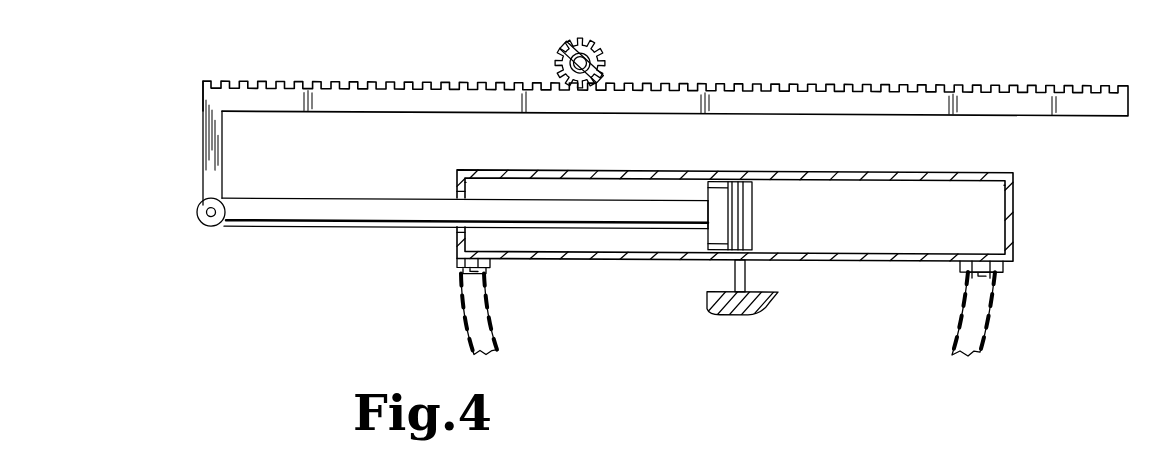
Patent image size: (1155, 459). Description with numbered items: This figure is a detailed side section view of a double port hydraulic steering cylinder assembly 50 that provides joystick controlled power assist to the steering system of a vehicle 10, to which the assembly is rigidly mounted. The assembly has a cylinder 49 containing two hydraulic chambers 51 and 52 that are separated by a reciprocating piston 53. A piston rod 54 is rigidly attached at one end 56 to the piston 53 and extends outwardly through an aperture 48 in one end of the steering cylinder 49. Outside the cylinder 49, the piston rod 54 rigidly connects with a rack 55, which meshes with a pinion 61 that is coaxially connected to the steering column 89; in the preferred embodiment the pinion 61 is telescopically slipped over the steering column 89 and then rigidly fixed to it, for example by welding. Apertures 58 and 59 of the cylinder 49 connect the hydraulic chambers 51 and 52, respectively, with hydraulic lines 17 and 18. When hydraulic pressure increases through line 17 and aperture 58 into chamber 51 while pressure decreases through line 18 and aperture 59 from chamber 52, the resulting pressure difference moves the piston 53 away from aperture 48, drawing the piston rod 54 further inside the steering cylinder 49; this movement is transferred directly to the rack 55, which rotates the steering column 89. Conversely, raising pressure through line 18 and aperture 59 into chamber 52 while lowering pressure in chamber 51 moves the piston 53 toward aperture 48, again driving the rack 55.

The vehicle 10 is at (768, 295).
The hydraulic line 17 is at (497, 344).
The hydraulic line 18 is at (985, 337).
The aperture 48 is at (458, 204).
The cylinder 49 is at (612, 258).
The hydraulic steering cylinder assembly 50 is at (828, 166).
The hydraulic chamber 51 is at (546, 182).
The hydraulic chamber 52 is at (918, 184).
The piston 53 is at (721, 192).
The piston rod 54 is at (591, 201).
The rack 55 is at (368, 101).
The end 56 is at (705, 215).
The aperture 58 is at (480, 280).
The aperture 59 is at (993, 296).
The pinion 61 is at (564, 44).
The steering column 89 is at (591, 41).